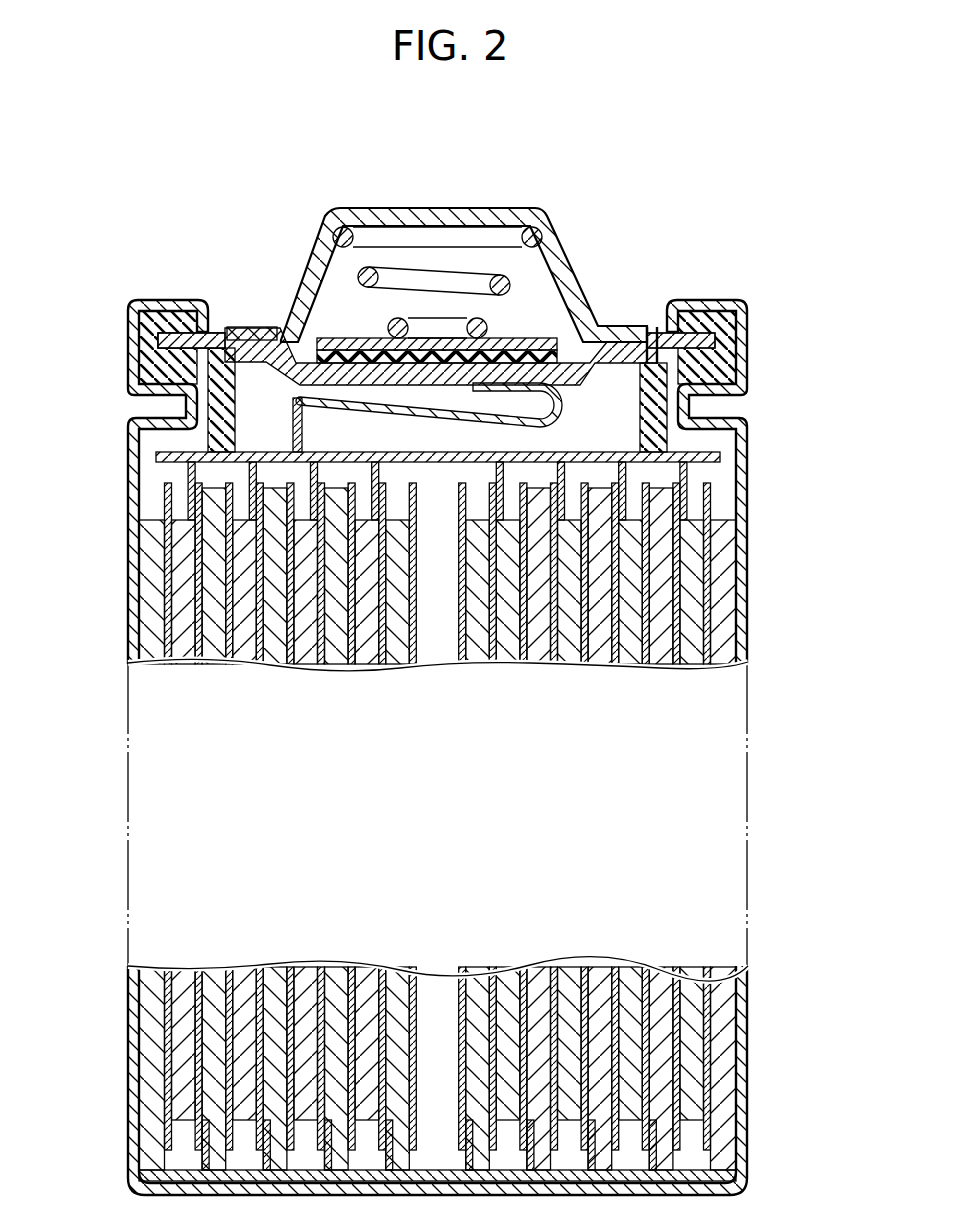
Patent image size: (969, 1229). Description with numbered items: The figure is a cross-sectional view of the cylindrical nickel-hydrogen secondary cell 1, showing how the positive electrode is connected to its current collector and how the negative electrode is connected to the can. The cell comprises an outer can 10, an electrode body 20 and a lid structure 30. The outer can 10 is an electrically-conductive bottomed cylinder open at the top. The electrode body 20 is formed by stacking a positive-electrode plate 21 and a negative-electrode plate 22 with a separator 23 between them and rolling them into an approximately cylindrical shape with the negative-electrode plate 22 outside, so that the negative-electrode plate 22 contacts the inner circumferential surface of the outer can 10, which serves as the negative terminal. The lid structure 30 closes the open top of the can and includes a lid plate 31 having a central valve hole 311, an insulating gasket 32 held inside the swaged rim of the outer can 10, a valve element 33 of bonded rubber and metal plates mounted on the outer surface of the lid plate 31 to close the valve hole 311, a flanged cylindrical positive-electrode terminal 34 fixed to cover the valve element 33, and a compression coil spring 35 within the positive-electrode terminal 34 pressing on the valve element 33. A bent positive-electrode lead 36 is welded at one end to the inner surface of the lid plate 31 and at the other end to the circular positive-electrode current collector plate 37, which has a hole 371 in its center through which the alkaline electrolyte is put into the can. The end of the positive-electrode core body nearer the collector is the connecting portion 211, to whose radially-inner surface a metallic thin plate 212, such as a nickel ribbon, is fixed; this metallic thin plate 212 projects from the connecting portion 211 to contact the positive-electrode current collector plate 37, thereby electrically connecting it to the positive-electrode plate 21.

The nickel-hydrogen secondary cell 1 is at (650, 200).
The outer can 10 is at (128, 588).
The electrode body 20 is at (370, 664).
The positive-electrode plate 21 is at (717, 563).
The negative-electrode plate 22 is at (717, 625).
The separator 23 is at (197, 668).
The lid structure 30 is at (503, 208).
The lid plate 31 is at (654, 342).
The valve hole 311 is at (475, 385).
The insulating gasket 32 is at (690, 330).
The valve element 33 is at (563, 340).
The positive-electrode terminal 34 is at (383, 206).
The compression coil spring 35 is at (335, 236).
The positive-electrode lead 36 is at (700, 362).
The positive-electrode current collector plate 37 is at (655, 440).
The hole 371 is at (282, 335).
The connecting portion 211 is at (684, 497).
The metallic thin plate 212 is at (705, 460).